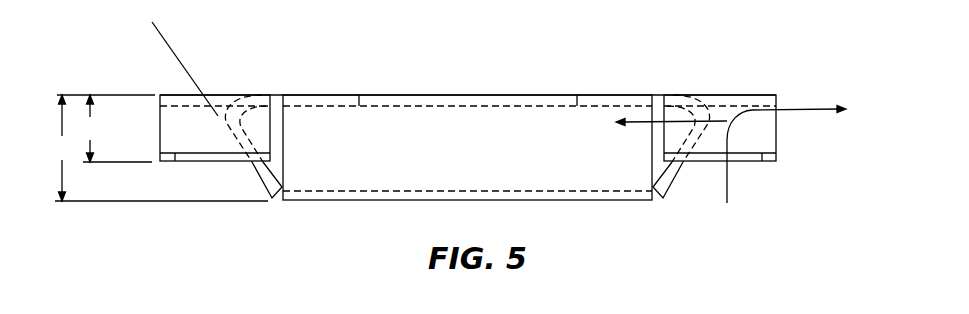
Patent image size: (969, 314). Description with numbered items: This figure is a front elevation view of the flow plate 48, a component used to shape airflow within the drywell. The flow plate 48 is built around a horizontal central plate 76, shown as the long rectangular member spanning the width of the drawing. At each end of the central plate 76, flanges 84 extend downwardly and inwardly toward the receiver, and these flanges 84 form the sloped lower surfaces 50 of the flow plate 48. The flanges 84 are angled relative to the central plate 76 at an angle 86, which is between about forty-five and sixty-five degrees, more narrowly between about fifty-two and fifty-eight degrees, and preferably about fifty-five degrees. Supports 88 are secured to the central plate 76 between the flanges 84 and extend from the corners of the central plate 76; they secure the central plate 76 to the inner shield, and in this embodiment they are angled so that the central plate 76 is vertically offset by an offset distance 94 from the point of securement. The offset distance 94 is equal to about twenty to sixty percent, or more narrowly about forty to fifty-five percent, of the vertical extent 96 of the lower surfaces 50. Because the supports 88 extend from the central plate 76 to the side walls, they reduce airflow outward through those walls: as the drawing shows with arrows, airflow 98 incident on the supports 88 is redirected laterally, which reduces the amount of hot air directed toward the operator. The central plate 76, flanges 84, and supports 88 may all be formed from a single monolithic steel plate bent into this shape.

The flow plate 48 is at (511, 70).
The central plate 76 is at (409, 95).
The flanges 84 is at (283, 165).
The supports 88 is at (185, 128).
The sloped lower surfaces 50 is at (234, 183).
The airflow 98 is at (727, 178).
The angle 86 is at (154, 40).
The offset distance 94 is at (115, 128).
The vertical extent 96 is at (158, 148).